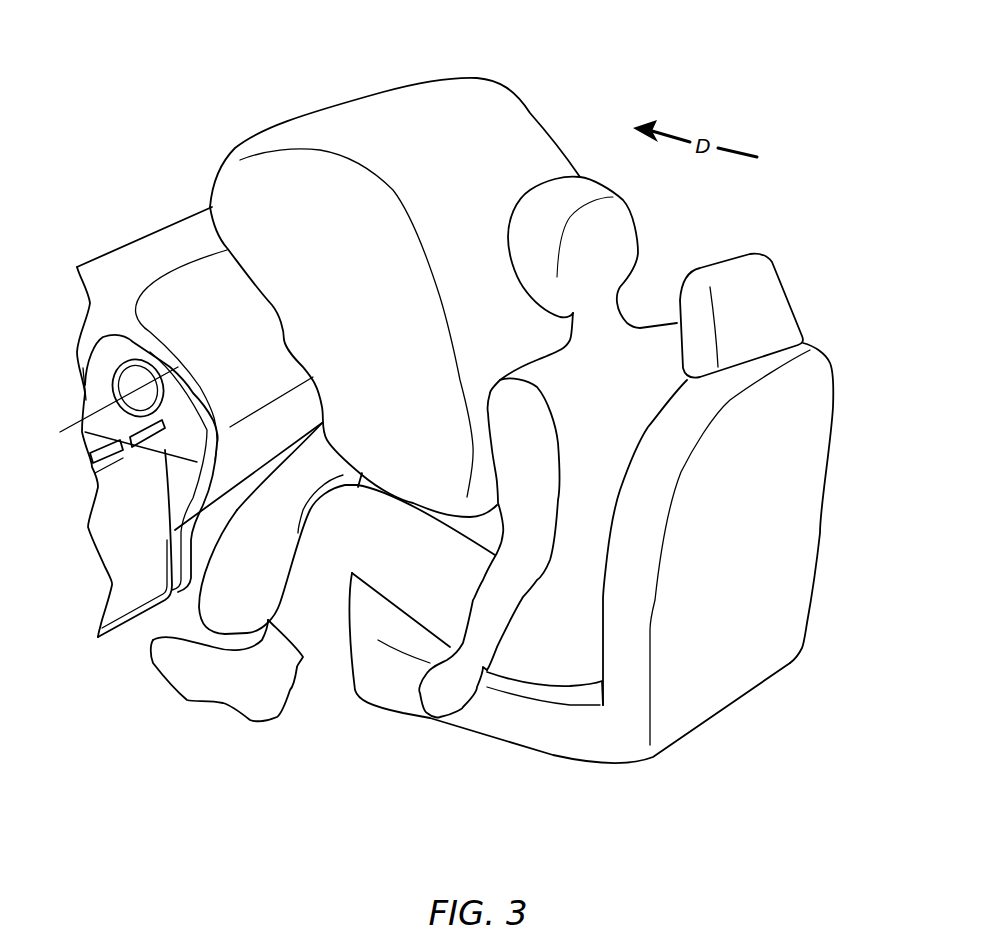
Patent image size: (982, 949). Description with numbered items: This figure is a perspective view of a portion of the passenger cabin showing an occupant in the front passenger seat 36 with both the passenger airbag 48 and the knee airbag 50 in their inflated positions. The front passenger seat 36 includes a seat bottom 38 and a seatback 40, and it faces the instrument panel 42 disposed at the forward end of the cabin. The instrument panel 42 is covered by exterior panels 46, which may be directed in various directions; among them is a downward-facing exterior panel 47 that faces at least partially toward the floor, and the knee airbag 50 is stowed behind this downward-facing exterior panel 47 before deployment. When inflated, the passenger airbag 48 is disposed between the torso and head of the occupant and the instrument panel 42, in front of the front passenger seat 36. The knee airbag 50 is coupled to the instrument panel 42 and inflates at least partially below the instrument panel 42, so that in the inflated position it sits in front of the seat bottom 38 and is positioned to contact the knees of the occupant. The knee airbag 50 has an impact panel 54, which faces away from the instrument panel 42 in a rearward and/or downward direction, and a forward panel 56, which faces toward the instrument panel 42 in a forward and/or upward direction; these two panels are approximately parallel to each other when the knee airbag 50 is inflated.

The front passenger seat 36 is at (623, 522).
The seat bottom 38 is at (440, 722).
The seatback 40 is at (833, 412).
The instrument panel 42 is at (170, 225).
The exterior panels 46 is at (130, 437).
The downward-facing exterior panel 47 is at (175, 530).
The passenger airbag 48 is at (477, 78).
The knee airbag 50 is at (217, 633).
The impact panel 54 is at (267, 593).
The forward panel 56 is at (252, 490).